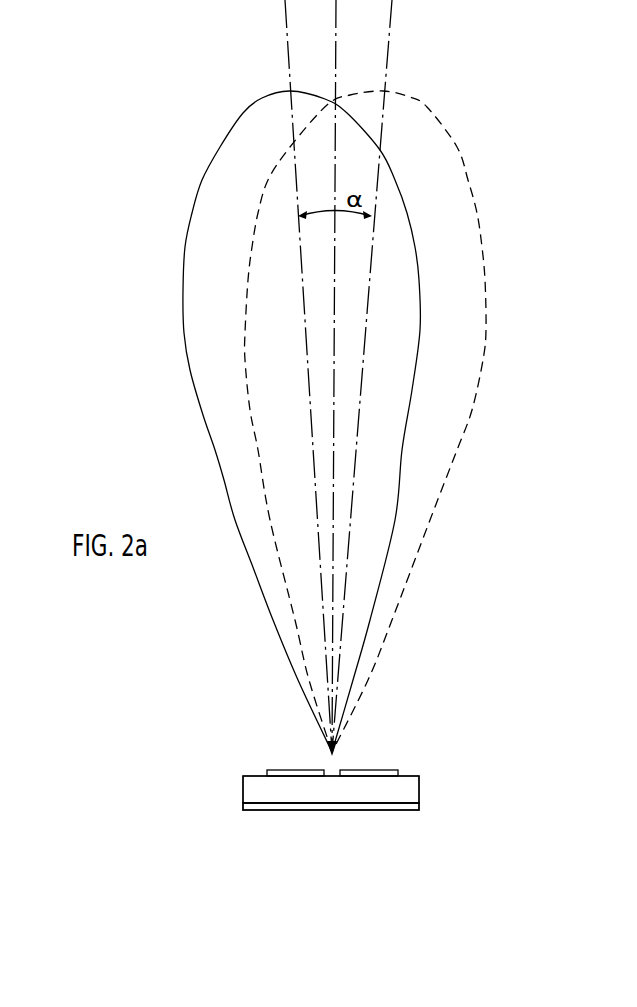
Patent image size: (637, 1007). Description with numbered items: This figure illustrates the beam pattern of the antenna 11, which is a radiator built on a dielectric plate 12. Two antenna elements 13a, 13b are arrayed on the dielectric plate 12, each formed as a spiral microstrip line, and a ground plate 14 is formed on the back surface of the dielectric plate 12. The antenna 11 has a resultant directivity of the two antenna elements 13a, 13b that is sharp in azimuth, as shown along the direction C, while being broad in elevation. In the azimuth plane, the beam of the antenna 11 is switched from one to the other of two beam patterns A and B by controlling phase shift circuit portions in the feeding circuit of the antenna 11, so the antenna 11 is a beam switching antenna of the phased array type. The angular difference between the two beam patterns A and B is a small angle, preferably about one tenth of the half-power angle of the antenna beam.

The antenna 11 is at (240, 790).
The dielectric plate 12 is at (419, 783).
The antenna element 13a is at (288, 768).
The antenna element 13b is at (366, 768).
The ground plate 14 is at (302, 810).
The beam pattern A is at (240, 115).
The beam pattern B is at (422, 107).
The direction C is at (337, 60).